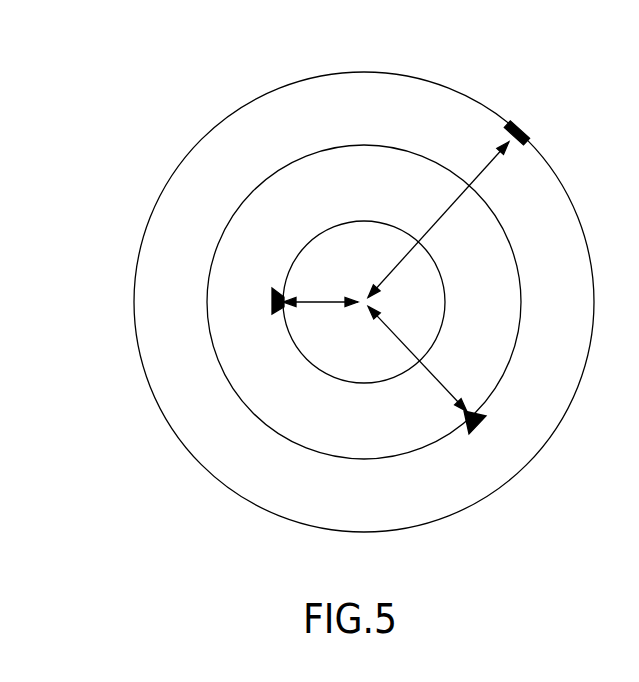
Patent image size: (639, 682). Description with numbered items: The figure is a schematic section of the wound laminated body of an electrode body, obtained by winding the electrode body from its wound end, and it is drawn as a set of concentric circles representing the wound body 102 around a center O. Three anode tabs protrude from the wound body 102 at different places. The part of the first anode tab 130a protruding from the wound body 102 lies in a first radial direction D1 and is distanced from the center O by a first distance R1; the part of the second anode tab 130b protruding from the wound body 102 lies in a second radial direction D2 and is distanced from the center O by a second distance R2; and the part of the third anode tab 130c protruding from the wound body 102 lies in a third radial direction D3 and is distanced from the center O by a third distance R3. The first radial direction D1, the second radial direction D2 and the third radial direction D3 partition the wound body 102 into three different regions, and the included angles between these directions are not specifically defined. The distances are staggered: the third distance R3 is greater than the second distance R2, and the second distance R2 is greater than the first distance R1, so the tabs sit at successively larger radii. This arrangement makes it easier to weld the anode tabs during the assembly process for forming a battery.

The wound body 102 is at (196, 70).
The first anode tab 130a is at (274, 299).
The second anode tab 130b is at (478, 428).
The third anode tab 130c is at (519, 129).
The center O is at (358, 285).
The first distance R1 is at (320, 290).
The second distance R2 is at (420, 358).
The third distance R3 is at (438, 220).
The first radial direction D1 is at (257, 320).
The second radial direction D2 is at (466, 454).
The third radial direction D3 is at (479, 132).